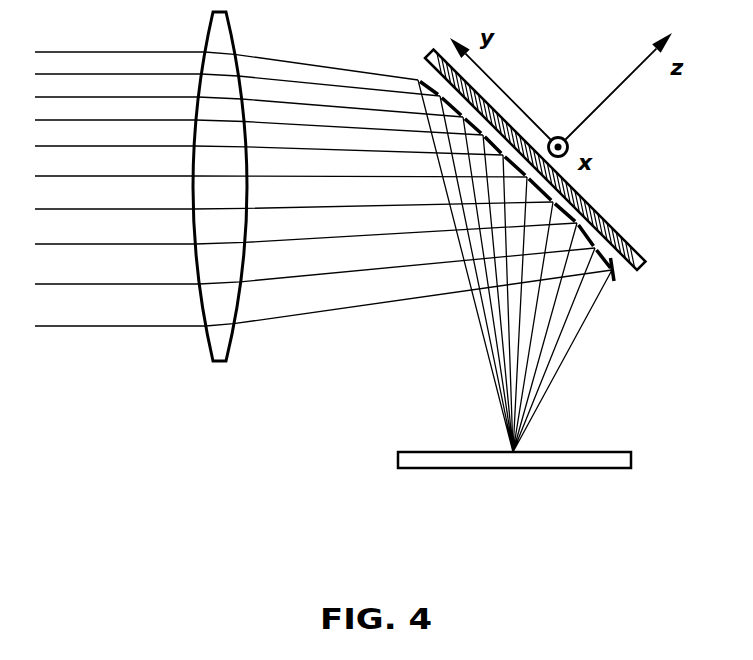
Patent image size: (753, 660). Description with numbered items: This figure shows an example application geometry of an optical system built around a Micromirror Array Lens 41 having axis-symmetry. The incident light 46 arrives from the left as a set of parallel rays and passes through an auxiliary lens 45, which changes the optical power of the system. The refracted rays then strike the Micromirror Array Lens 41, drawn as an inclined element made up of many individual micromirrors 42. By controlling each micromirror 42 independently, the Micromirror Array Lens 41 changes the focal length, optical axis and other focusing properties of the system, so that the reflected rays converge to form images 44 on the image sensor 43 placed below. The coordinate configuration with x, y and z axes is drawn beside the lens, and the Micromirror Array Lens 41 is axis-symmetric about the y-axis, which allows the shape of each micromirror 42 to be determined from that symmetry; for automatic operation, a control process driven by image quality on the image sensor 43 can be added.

The Micromirror Array Lens 41 is at (618, 225).
The micromirror 42 is at (617, 278).
The image sensor 43 is at (447, 470).
The image 44 is at (513, 457).
The auxiliary lens 45 is at (219, 367).
The incident light 46 is at (93, 293).